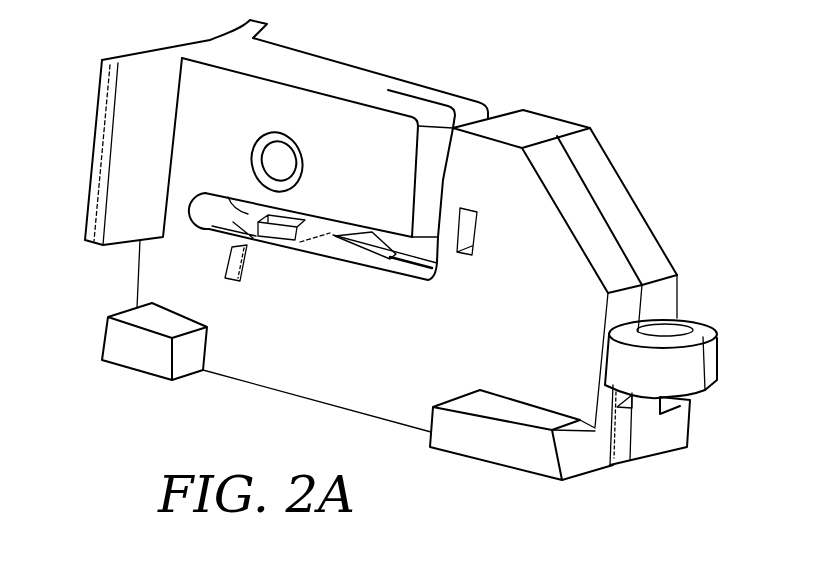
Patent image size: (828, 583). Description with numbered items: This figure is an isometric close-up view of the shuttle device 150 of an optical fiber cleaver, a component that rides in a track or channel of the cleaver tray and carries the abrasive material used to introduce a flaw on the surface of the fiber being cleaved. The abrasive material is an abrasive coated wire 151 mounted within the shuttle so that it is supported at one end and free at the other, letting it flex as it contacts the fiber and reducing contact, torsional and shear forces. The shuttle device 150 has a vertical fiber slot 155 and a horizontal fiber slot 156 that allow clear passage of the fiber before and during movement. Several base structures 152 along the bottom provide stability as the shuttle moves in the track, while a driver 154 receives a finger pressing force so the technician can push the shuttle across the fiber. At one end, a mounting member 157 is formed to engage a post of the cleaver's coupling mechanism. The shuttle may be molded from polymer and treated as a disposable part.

The shuttle device 150 is at (587, 87).
The abrasive coated wire 151 is at (370, 240).
The base structures 152 is at (118, 333).
The driver 154 is at (150, 52).
The vertical fiber slot 155 is at (468, 123).
The horizontal fiber slot 156 is at (330, 250).
The mounting member 157 is at (715, 354).